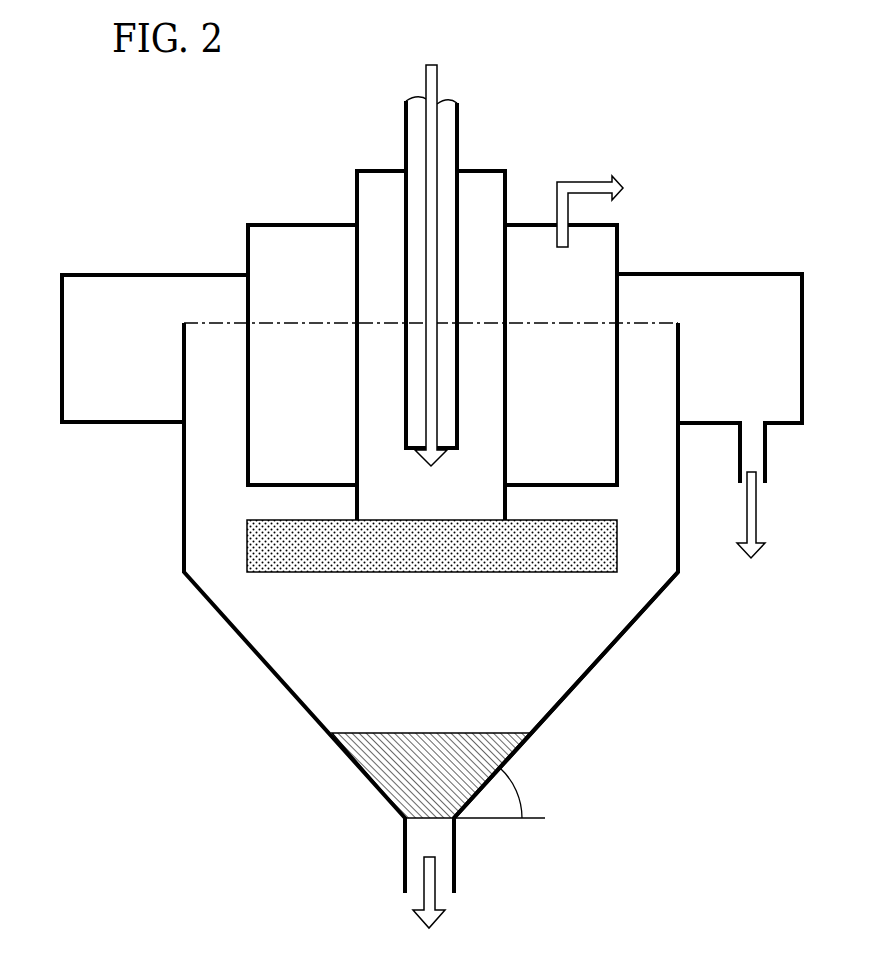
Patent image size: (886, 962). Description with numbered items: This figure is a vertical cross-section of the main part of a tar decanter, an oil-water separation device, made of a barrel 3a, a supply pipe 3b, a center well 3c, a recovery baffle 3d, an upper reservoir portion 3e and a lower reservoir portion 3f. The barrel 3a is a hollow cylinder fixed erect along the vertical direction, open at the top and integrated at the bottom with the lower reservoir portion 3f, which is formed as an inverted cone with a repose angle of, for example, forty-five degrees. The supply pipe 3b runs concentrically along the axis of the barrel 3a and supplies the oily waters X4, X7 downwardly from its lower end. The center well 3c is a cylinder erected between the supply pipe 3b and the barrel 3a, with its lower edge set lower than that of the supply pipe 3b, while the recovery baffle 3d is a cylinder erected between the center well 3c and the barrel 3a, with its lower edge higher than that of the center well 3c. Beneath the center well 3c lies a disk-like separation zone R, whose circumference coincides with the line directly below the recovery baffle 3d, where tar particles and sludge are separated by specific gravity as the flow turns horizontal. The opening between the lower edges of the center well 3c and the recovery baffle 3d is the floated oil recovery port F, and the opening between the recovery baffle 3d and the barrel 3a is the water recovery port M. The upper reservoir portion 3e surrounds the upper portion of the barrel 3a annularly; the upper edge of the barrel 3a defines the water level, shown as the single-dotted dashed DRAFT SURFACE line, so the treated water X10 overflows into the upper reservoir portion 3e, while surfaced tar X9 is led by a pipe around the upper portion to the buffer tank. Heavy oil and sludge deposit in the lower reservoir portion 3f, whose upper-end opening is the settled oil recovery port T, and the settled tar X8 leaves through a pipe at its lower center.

The barrel 3a is at (184, 530).
The supply pipe 3b is at (406, 121).
The center well 3c is at (357, 190).
The recovery baffle 3d is at (248, 262).
The upper reservoir portion 3e is at (62, 362).
The lower reservoir portion 3f is at (617, 647).
The oily water X4 is at (431, 246).
The oily water X7 is at (431, 246).
The settled tar X8 is at (429, 909).
The surfaced tar X9 is at (608, 211).
The treated water X10 is at (751, 531).
The water recovery port M is at (655, 462).
The floated oil recovery port F is at (595, 478).
The separation zone R is at (333, 572).
The settled oil recovery port T is at (315, 650).
The draft surface DRAFT is at (652, 323).